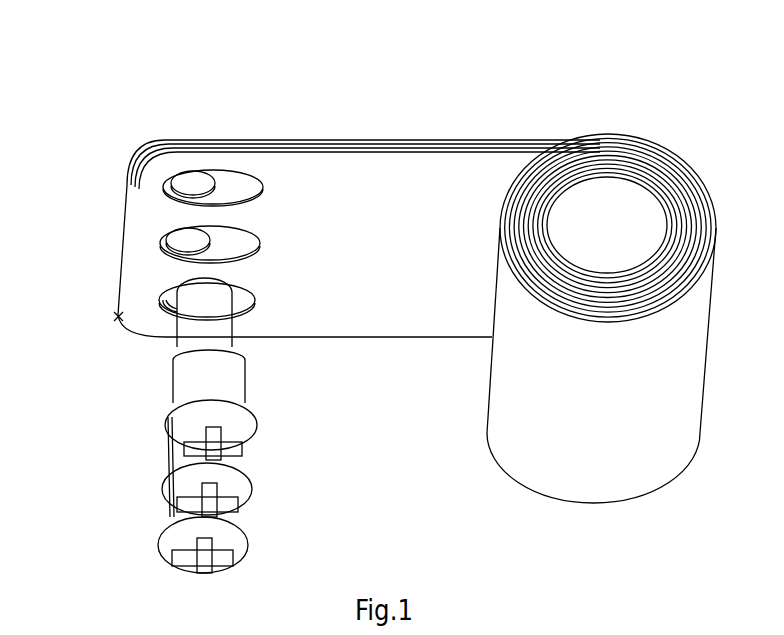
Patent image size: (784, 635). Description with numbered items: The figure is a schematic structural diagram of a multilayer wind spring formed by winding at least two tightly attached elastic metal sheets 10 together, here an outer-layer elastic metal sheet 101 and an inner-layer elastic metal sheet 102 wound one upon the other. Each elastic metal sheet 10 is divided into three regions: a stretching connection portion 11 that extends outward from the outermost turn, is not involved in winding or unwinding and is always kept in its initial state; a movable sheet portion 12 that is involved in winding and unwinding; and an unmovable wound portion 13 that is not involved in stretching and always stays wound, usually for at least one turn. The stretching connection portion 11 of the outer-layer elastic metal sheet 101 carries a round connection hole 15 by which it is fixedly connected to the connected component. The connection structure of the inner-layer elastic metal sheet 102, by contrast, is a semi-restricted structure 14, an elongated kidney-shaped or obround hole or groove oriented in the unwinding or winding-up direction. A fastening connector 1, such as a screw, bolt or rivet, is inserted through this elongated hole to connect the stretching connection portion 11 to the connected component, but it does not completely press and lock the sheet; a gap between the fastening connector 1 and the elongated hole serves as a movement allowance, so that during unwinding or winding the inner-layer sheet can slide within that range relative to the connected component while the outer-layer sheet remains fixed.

The fastening connector 1 is at (200, 380).
The elastic metal sheet 10 is at (377, 256).
The stretching connection portion 11 is at (125, 318).
The movable sheet portion 12 is at (304, 236).
The unmovable wound portion 13 is at (557, 230).
The semi-restricted structure 14 is at (233, 187).
The round connection hole 15 is at (197, 183).
The outer-layer elastic metal sheet 101 is at (350, 138).
The inner-layer elastic metal sheet 102 is at (310, 278).